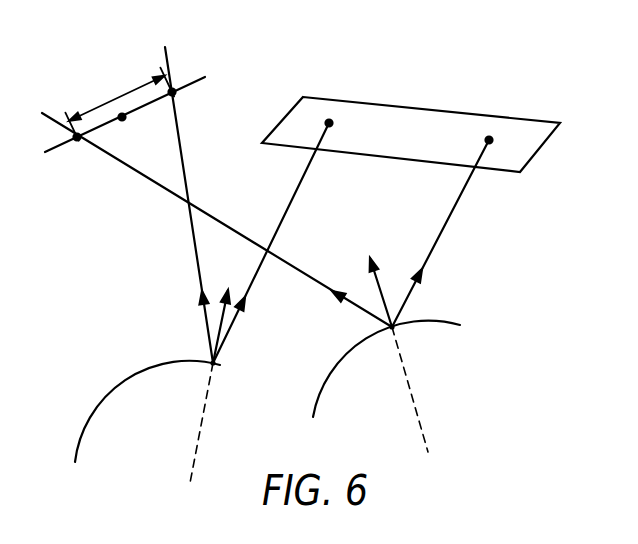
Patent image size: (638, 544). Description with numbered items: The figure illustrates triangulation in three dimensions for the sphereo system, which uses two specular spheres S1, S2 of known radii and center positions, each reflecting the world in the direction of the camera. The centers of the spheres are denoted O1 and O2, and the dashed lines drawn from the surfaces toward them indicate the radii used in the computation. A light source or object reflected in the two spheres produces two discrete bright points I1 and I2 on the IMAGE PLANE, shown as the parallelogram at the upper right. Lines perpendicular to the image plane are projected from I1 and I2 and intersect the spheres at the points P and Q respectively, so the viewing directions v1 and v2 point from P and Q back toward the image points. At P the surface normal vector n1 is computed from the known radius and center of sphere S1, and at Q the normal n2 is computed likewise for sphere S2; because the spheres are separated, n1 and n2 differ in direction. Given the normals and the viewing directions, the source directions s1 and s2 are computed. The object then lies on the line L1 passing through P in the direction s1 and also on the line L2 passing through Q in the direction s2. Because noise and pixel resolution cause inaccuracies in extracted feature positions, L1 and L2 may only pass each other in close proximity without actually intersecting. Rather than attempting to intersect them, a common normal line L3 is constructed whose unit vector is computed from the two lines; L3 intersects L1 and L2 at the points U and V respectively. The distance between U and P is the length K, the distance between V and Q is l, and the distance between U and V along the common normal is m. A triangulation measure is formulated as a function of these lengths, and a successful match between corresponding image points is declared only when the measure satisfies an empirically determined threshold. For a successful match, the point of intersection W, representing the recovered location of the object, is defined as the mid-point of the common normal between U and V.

The image plane IMAGE PLANE is at (411, 122).
The line L1 is at (189, 196).
The line L2 is at (211, 205).
The line L3 is at (139, 108).
The distance m is at (119, 104).
The point V is at (83, 149).
The point of intersection W is at (128, 131).
The point U is at (184, 99).
The bright image point I1 is at (284, 239).
The bright image point I2 is at (454, 229).
The distance k K is at (227, 210).
The distance l is at (196, 230).
The source direction s1 is at (189, 302).
The surface normal vector n1 is at (233, 314).
The viewing direction v1 is at (253, 311).
The source direction s2 is at (325, 306).
The surface normal vector n2 is at (382, 280).
The viewing direction v2 is at (435, 272).
The point P is at (201, 376).
The point Q is at (405, 337).
The specular sphere S1 is at (147, 411).
The specular sphere S2 is at (386, 371).
The center O1 of sphere S1 O1 is at (206, 429).
The center O2 of sphere S2 O2 is at (425, 397).